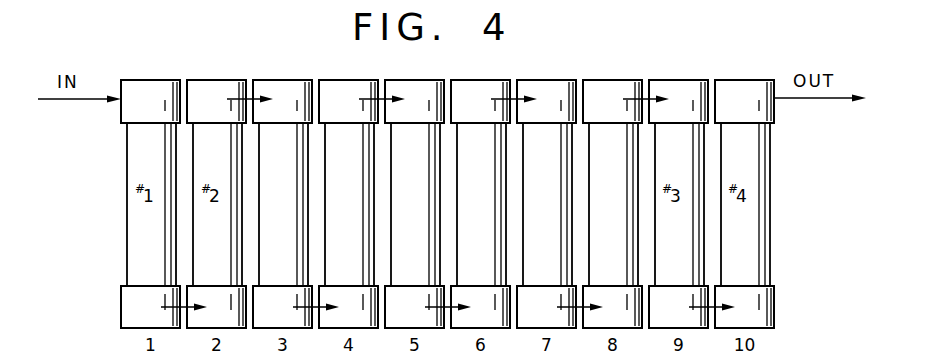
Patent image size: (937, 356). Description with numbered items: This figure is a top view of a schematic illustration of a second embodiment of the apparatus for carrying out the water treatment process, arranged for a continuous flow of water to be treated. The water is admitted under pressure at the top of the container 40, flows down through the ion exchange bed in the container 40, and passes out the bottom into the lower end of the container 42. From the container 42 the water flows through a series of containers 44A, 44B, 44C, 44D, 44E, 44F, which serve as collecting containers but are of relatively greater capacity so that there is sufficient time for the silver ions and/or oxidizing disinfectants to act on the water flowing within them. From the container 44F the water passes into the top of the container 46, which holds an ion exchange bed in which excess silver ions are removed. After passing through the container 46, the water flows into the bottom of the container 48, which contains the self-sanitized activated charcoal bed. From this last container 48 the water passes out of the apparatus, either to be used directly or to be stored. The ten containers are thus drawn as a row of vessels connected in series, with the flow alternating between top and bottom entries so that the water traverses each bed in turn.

The container 40 is at (127, 244).
The container 42 is at (218, 95).
The container 44A is at (273, 88).
The container 44B is at (348, 88).
The container 44C is at (418, 92).
The container 44D is at (478, 90).
The container 44E is at (543, 88).
The container 44F is at (618, 84).
The container 46 is at (680, 88).
The container 48 is at (746, 88).